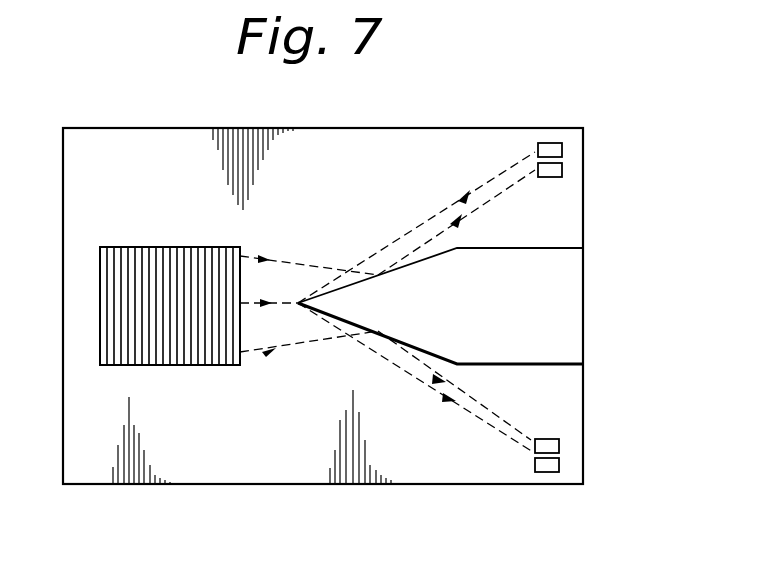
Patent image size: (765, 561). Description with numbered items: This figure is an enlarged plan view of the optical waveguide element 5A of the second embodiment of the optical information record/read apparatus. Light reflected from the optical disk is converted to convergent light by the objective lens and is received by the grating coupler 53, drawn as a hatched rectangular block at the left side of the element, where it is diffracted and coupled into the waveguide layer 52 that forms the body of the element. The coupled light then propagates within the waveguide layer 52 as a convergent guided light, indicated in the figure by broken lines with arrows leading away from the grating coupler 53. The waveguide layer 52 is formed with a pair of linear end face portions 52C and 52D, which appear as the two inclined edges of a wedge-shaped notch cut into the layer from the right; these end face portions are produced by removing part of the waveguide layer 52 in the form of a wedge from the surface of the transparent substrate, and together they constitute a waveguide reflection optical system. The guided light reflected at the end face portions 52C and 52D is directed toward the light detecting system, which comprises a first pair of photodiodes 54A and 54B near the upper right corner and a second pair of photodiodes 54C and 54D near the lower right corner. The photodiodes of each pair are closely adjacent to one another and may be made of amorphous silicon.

The optical waveguide element 5A is at (620, 284).
The waveguide layer 52 is at (317, 136).
The grating coupler 53 is at (170, 254).
The linear end face portion 52C is at (412, 274).
The linear end face portion 52D is at (415, 342).
The photodiode 54A is at (562, 150).
The photodiode 54B is at (562, 170).
The photodiode 54C is at (559, 446).
The photodiode 54D is at (559, 465).